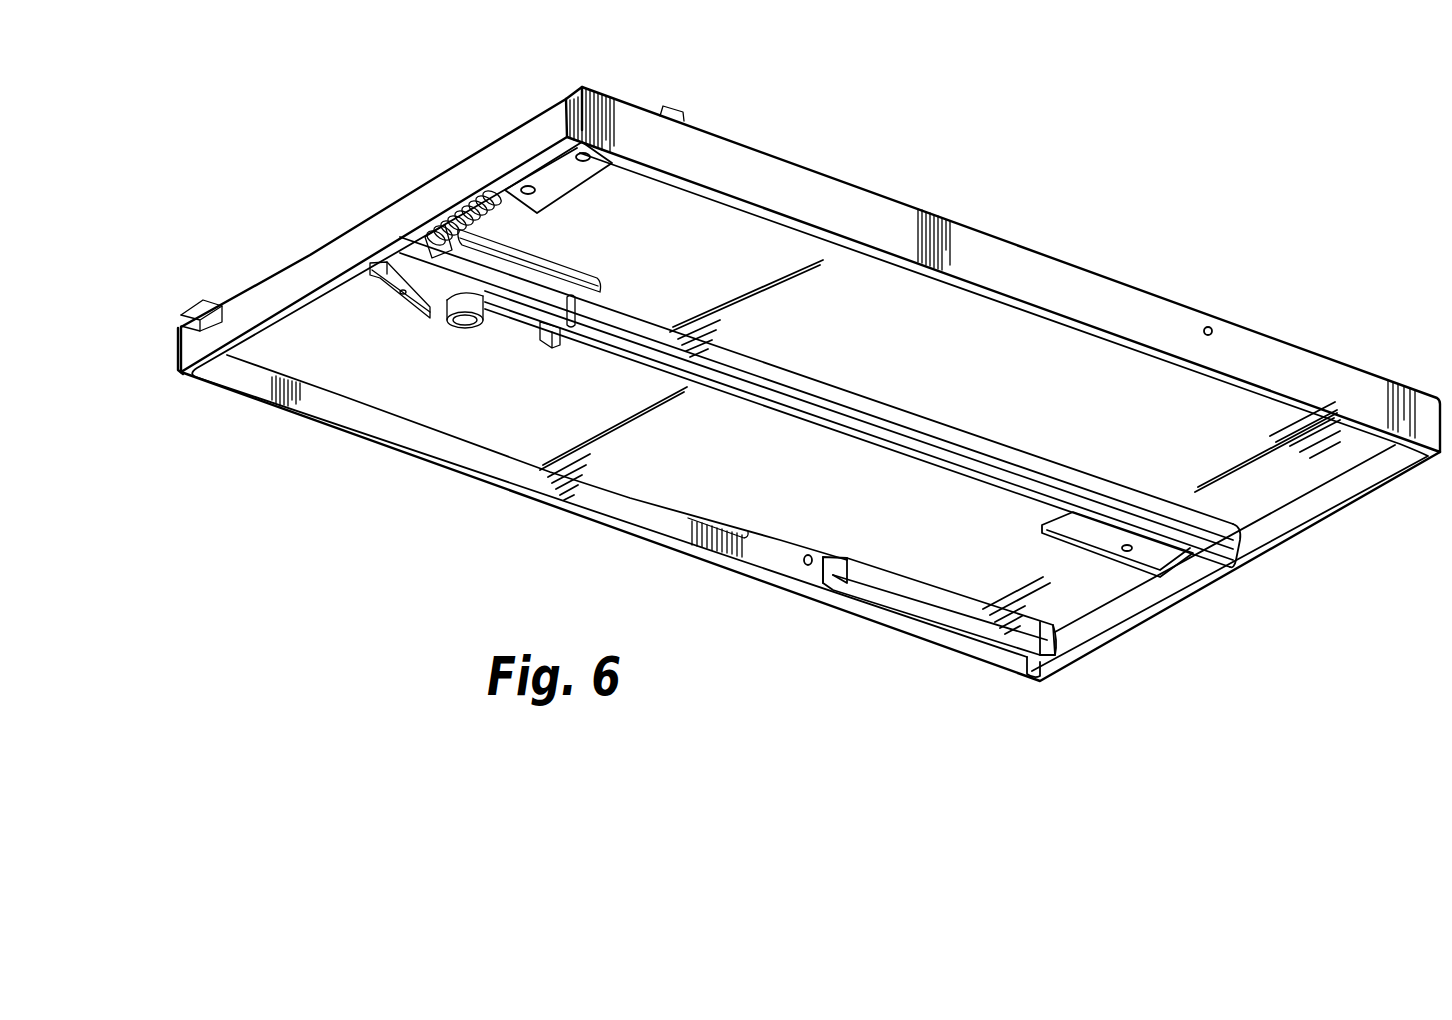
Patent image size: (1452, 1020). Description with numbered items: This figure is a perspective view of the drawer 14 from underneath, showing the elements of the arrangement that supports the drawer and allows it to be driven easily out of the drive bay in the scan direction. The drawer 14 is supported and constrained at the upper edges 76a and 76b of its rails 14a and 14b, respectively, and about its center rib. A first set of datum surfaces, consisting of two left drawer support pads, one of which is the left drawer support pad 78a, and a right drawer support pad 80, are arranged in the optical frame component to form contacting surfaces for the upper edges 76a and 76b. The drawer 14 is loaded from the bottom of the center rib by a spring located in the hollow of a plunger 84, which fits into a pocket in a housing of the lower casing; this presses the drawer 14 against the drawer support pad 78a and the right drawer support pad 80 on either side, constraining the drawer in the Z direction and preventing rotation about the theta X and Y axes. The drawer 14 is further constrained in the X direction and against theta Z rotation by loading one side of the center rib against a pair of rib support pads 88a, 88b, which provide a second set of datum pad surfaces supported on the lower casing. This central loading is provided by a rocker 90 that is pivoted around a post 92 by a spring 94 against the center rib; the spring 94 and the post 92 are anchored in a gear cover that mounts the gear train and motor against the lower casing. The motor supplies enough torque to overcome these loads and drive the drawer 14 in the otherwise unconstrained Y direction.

The drawer 14 is at (441, 185).
The rail 14a is at (375, 432).
The rail 14b is at (965, 245).
The upper edge 76a is at (174, 328).
The upper edge 76b is at (580, 96).
The left drawer support pad 78a is at (197, 297).
The right drawer support pad 80 is at (680, 112).
The plunger 84 is at (441, 312).
The rib support pad 88a is at (380, 275).
The rib support pad 88b is at (547, 346).
The rocker 90 is at (560, 260).
The post 92 is at (588, 298).
The spring 94 is at (493, 222).